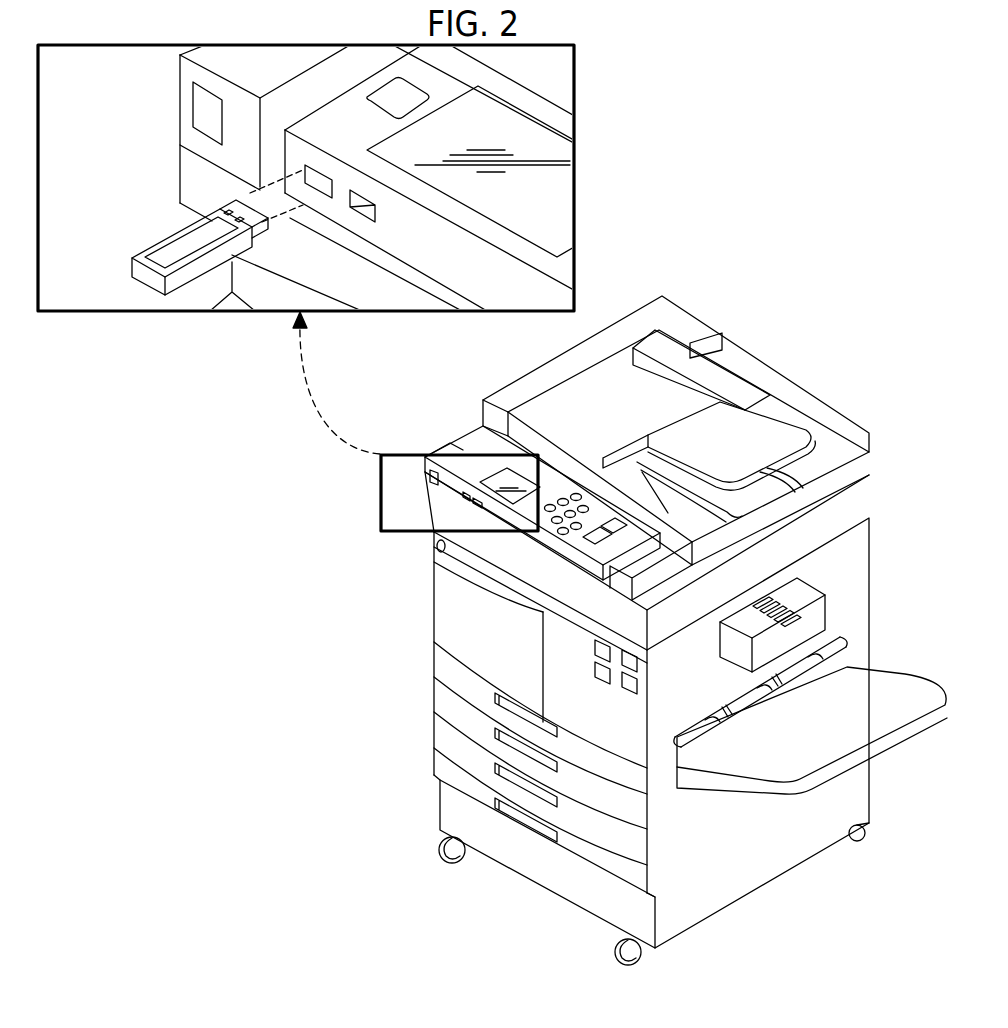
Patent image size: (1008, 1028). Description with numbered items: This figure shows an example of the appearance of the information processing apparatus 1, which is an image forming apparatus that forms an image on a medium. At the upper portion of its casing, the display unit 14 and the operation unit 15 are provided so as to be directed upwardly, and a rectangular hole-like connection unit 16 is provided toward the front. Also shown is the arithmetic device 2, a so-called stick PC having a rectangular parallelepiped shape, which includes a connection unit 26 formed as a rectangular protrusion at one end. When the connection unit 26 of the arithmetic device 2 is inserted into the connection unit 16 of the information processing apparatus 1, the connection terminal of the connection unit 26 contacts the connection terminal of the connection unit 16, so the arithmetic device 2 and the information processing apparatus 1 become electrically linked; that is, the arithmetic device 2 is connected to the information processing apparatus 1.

The information processing apparatus 1 is at (675, 315).
The arithmetic device 2 is at (191, 216).
The display unit 14 is at (528, 148).
The operation unit 15 is at (577, 500).
The connection unit 16 is at (308, 183).
The connection unit 26 is at (258, 203).